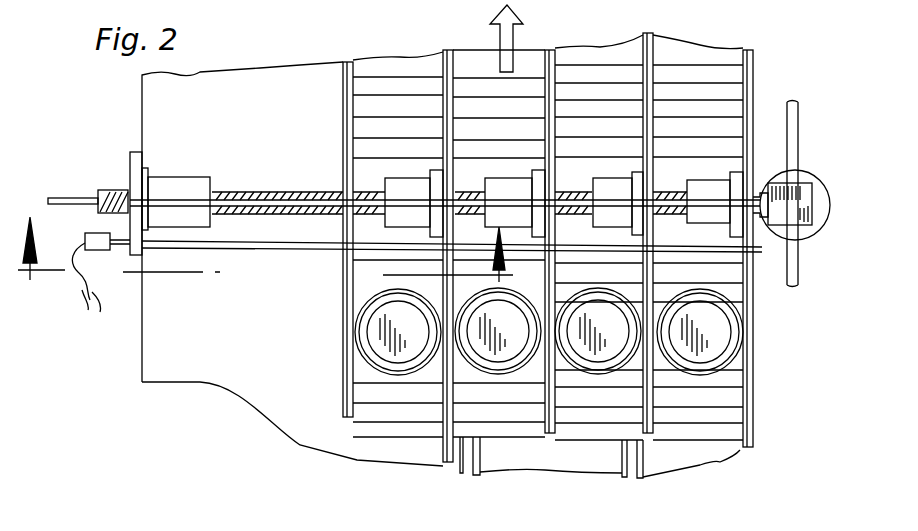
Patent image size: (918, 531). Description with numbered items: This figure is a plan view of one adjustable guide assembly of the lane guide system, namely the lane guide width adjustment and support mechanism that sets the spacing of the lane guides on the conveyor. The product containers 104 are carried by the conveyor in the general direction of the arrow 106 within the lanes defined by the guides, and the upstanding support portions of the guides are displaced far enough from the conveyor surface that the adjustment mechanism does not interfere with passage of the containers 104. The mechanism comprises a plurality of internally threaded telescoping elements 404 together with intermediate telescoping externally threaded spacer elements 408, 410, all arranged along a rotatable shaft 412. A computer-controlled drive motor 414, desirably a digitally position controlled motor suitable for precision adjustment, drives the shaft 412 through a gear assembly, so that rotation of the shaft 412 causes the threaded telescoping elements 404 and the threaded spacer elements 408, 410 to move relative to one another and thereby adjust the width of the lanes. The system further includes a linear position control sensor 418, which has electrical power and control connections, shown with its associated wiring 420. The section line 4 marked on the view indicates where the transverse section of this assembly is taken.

The arrow 106 is at (692, 58).
The product containers 104 is at (380, 337).
The internally threaded telescoping element 404 is at (397, 183).
The externally threaded spacer element 408 is at (563, 180).
The externally threaded spacer element 410 is at (105, 187).
The rotatable shaft 412 is at (80, 172).
The drive motor 414 is at (818, 178).
The linear position control sensor 418 is at (90, 236).
The wire 420 is at (97, 293).
The section line 4- 4 is at (272, 264).